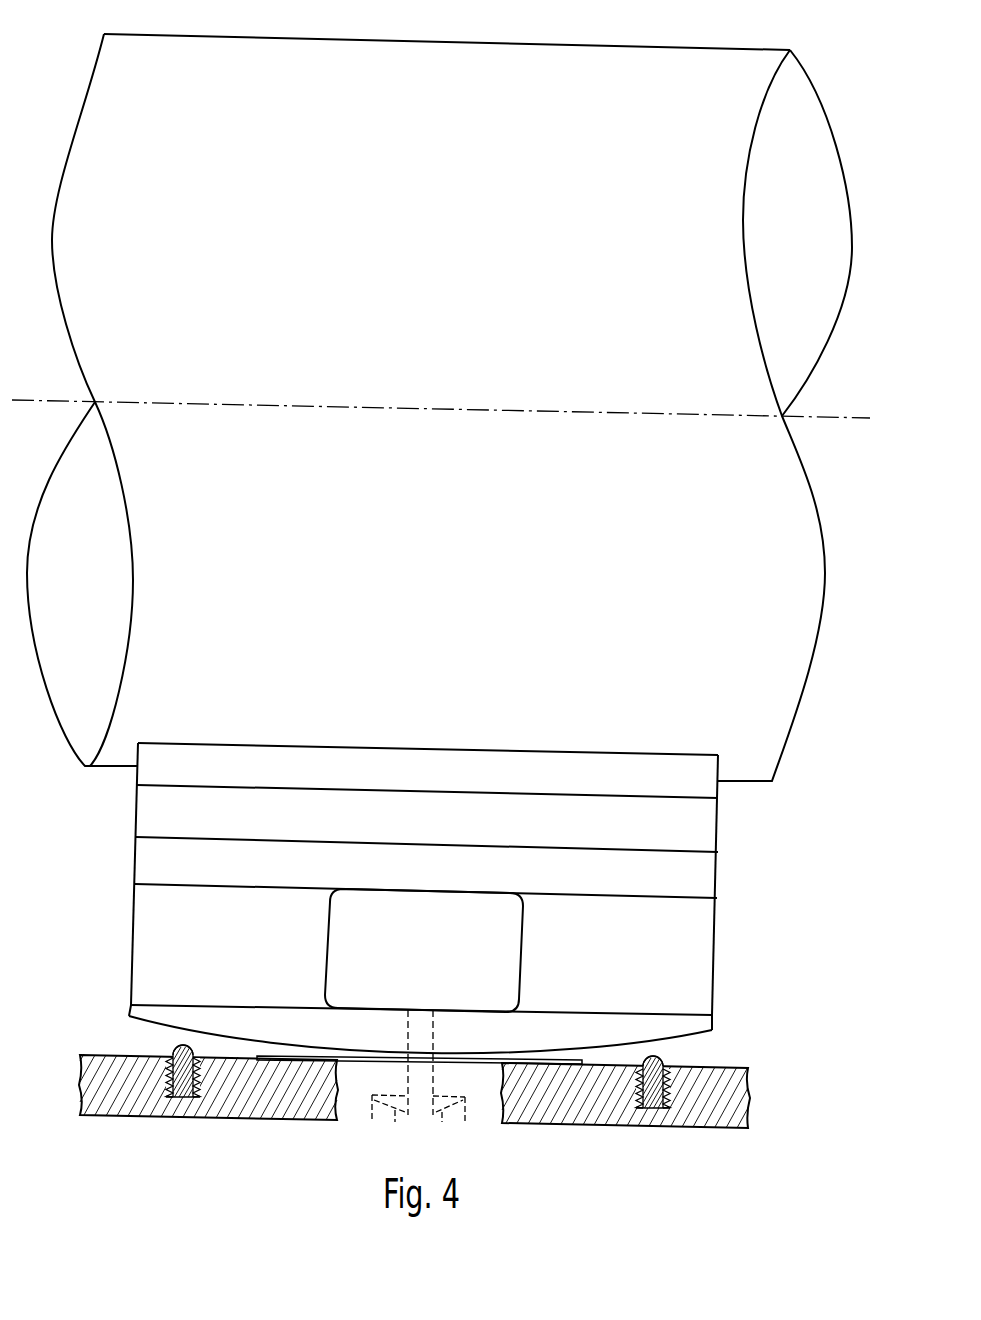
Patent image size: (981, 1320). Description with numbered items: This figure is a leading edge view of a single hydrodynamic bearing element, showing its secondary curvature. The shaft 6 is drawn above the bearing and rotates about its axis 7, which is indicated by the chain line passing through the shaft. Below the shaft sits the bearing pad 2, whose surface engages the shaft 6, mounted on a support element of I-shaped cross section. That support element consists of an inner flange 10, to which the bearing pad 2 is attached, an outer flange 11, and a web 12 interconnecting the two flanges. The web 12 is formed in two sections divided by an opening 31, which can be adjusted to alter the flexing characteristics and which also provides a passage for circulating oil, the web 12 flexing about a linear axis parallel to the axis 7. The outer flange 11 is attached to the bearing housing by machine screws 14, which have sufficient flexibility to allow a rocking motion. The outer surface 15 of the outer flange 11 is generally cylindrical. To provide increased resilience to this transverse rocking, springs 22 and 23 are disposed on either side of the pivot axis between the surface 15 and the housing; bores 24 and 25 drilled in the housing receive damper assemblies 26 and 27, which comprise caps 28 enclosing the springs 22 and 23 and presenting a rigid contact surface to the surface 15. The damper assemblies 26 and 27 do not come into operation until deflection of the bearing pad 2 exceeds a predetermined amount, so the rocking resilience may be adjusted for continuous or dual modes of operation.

The bearing pad 2 is at (713, 788).
The shaft 6 is at (442, 604).
The axis 7 is at (840, 418).
The inner flange 10 is at (708, 875).
The outer flange 11 is at (710, 1025).
The web 12 is at (137, 940).
The machine screws 14 is at (442, 1122).
The outer surface of outer flange 15 is at (128, 1025).
The spring 22 is at (167, 1077).
The spring 23 is at (642, 1091).
The bore 24 is at (182, 1098).
The bore 25 is at (652, 1109).
The damper assembly 26 is at (205, 1082).
The damper assembly 27 is at (673, 1093).
The cap 28 is at (177, 1044).
The opening 31 is at (434, 953).